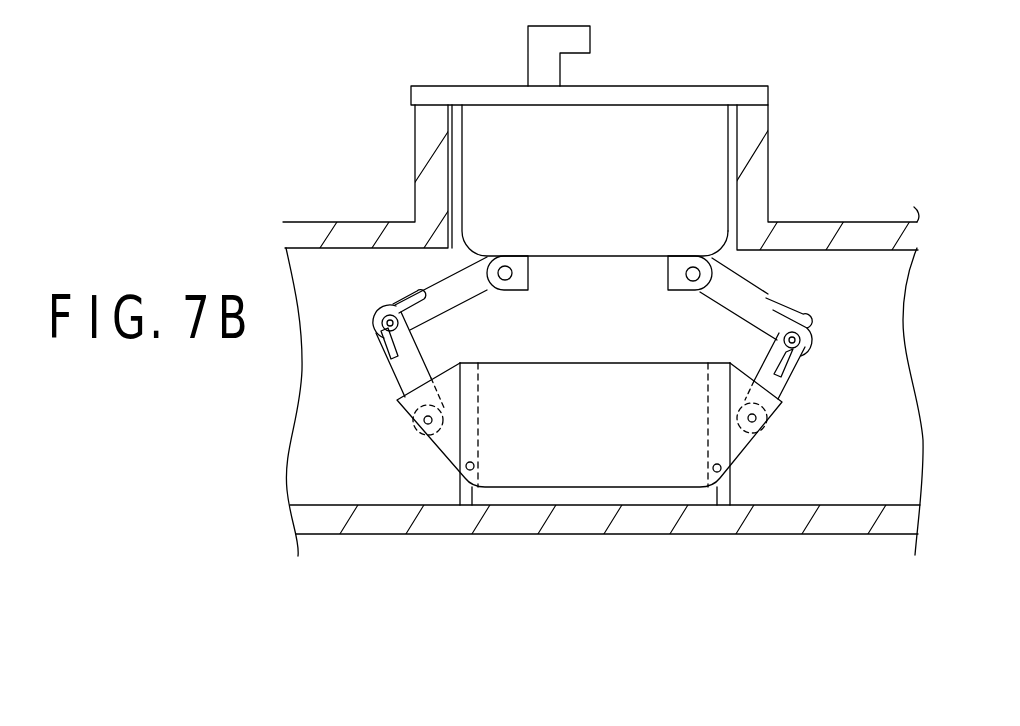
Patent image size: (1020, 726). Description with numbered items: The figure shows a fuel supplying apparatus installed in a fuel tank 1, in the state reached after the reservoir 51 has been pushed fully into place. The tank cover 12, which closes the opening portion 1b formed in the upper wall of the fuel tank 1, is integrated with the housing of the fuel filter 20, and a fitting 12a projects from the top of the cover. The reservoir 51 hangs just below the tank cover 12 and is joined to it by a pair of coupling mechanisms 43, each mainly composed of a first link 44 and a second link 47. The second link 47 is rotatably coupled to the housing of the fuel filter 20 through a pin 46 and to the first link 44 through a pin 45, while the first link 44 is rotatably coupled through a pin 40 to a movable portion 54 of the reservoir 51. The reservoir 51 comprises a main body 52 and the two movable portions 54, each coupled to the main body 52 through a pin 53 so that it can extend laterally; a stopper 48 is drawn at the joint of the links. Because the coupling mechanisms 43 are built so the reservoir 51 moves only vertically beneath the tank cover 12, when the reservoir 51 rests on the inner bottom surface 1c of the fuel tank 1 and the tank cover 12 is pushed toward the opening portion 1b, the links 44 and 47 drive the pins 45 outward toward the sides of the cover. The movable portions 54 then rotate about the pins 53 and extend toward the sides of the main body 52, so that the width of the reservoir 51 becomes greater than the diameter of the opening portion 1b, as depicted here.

The fuel tank 1 is at (320, 235).
The opening portion 1b is at (725, 208).
The inner bottom surface 1c is at (845, 507).
The tank cover 12 is at (683, 95).
The connecting pipe 12a is at (578, 40).
The fuel filter 20 is at (707, 157).
The pin 40 is at (420, 430).
The coupling mechanism 43 is at (599, 270).
The first link 44 is at (590, 361).
The pin 45 is at (380, 335).
The pin 46 is at (512, 273).
The second link 47 is at (465, 288).
The stopper 48 is at (380, 312).
The reservoir 51 is at (592, 462).
The main body 52 is at (585, 362).
The pin 53 is at (465, 470).
The movable portion 54 is at (400, 408).